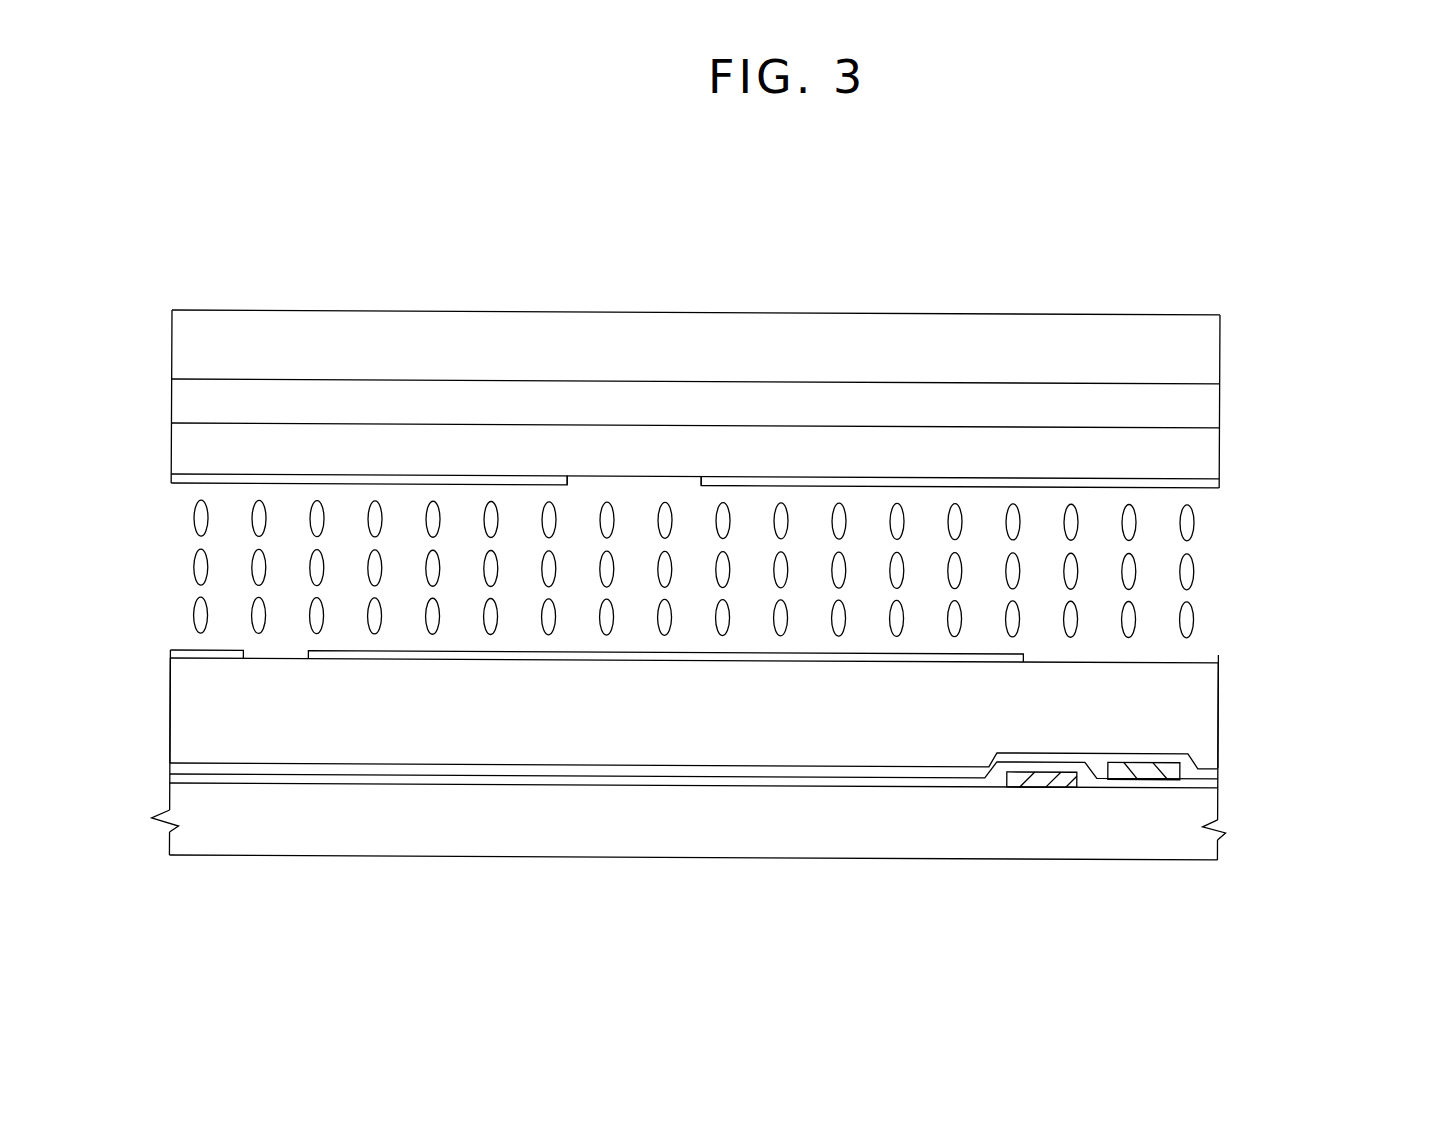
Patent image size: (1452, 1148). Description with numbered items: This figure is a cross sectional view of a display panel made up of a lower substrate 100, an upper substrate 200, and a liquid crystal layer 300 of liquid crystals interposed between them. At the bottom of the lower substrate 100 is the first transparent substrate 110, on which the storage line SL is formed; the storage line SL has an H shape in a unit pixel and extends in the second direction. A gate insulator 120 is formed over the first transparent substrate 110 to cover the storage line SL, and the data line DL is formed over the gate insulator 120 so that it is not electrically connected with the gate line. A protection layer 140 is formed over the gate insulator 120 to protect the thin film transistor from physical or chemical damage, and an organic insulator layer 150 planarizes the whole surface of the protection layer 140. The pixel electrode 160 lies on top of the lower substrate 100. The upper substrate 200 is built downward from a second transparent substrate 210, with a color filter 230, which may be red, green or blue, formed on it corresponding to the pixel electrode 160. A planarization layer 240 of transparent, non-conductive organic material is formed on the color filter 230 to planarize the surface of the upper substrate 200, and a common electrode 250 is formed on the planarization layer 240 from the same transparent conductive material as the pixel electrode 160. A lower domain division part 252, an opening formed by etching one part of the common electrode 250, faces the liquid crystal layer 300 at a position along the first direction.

The lower substrate 100 is at (1330, 755).
The first transparent substrate 110 is at (1225, 830).
The gate insulator 120 is at (1213, 784).
The protection layer 140 is at (1213, 775).
The organic insulator layer 150 is at (1213, 724).
The pixel electrode 160 is at (1213, 661).
The upper substrate 200 is at (1330, 405).
The second transparent substrate 210 is at (1213, 359).
The color filter 230 is at (1213, 407).
The planarization layer 240 is at (1213, 457).
The common electrode 250 is at (180, 480).
The lower domain division part 252 is at (635, 484).
The liquid crystal layer 300 is at (1205, 572).
The storage line SL is at (1041, 785).
The data line DL is at (1143, 772).